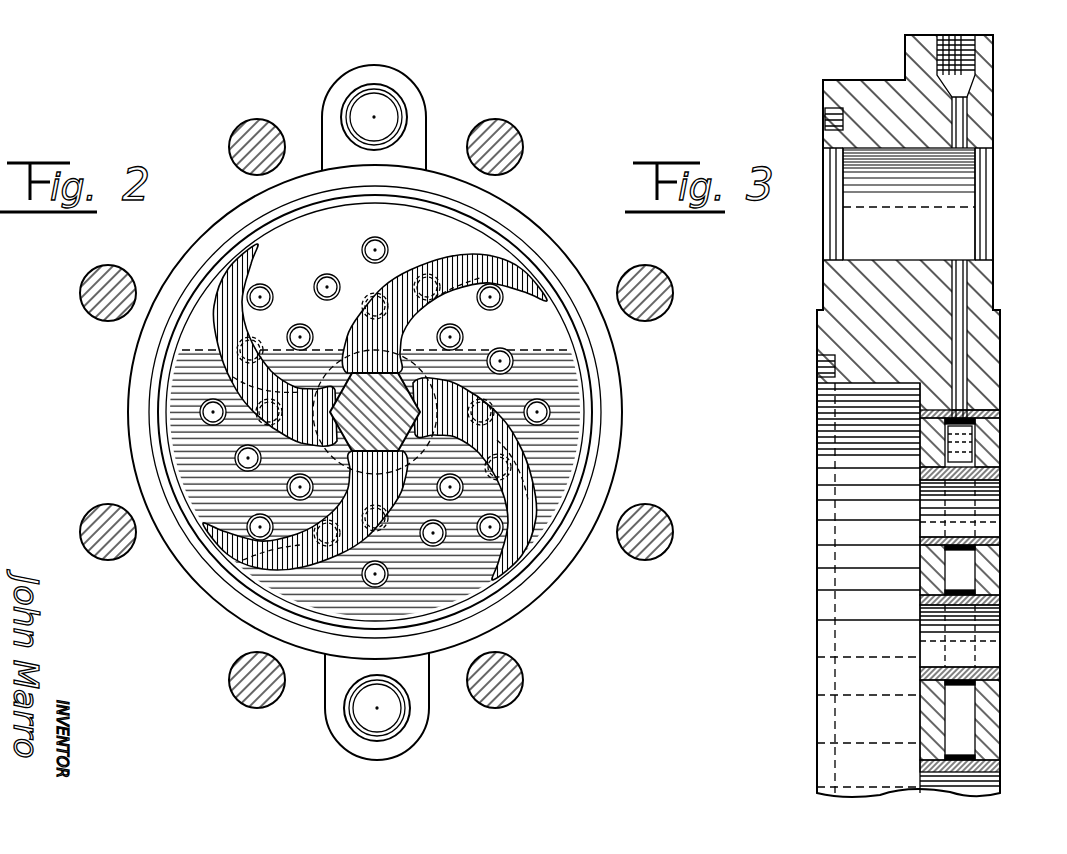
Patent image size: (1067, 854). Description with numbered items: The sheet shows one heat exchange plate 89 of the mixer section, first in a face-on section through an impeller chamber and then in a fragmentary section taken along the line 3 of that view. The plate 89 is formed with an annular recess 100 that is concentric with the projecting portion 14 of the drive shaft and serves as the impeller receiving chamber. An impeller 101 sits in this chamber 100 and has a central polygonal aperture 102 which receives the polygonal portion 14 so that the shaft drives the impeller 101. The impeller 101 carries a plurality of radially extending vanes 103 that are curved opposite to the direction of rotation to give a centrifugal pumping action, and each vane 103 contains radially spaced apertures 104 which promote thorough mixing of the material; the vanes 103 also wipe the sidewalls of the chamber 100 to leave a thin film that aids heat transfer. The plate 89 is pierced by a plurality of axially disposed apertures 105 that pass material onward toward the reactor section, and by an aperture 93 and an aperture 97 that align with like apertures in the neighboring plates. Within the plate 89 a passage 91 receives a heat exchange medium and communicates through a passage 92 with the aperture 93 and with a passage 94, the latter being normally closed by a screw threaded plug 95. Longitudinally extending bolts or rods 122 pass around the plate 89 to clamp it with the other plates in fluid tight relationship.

In FIG. 2, the section line 3— 3 is at (354, 45).
In FIG. 2, the projecting portion of the shaft 14 is at (330, 374).
In FIG. 3, the heat exchange plate 89 is at (862, 72).
In FIG. 3, the passage 91 is at (975, 457).
In FIG. 3, the passage 92 is at (967, 395).
In FIG. 2, the aperture 93 is at (398, 108).
In FIG. 3, the aperture 93 is at (903, 258).
In FIG. 3, the passage 94 is at (963, 130).
In FIG. 3, the plug 95 is at (975, 40).
In FIG. 2, the aperture 97 is at (352, 722).
In FIG. 2, the annular recess 100 is at (566, 300).
In FIG. 3, the annular recess 100 is at (830, 386).
In FIG. 2, the impeller 101 is at (352, 338).
In FIG. 2, the central polygonal aperture 102 is at (375, 325).
In FIG. 2, the vanes 103 is at (497, 255).
In FIG. 2, the apertures 104 is at (487, 220).
In FIG. 2, the axially disposed apertures 105 is at (388, 253).
In FIG. 3, the axially disposed apertures 105 is at (985, 528).
In FIG. 2, the bolts or rods 122 is at (270, 124).